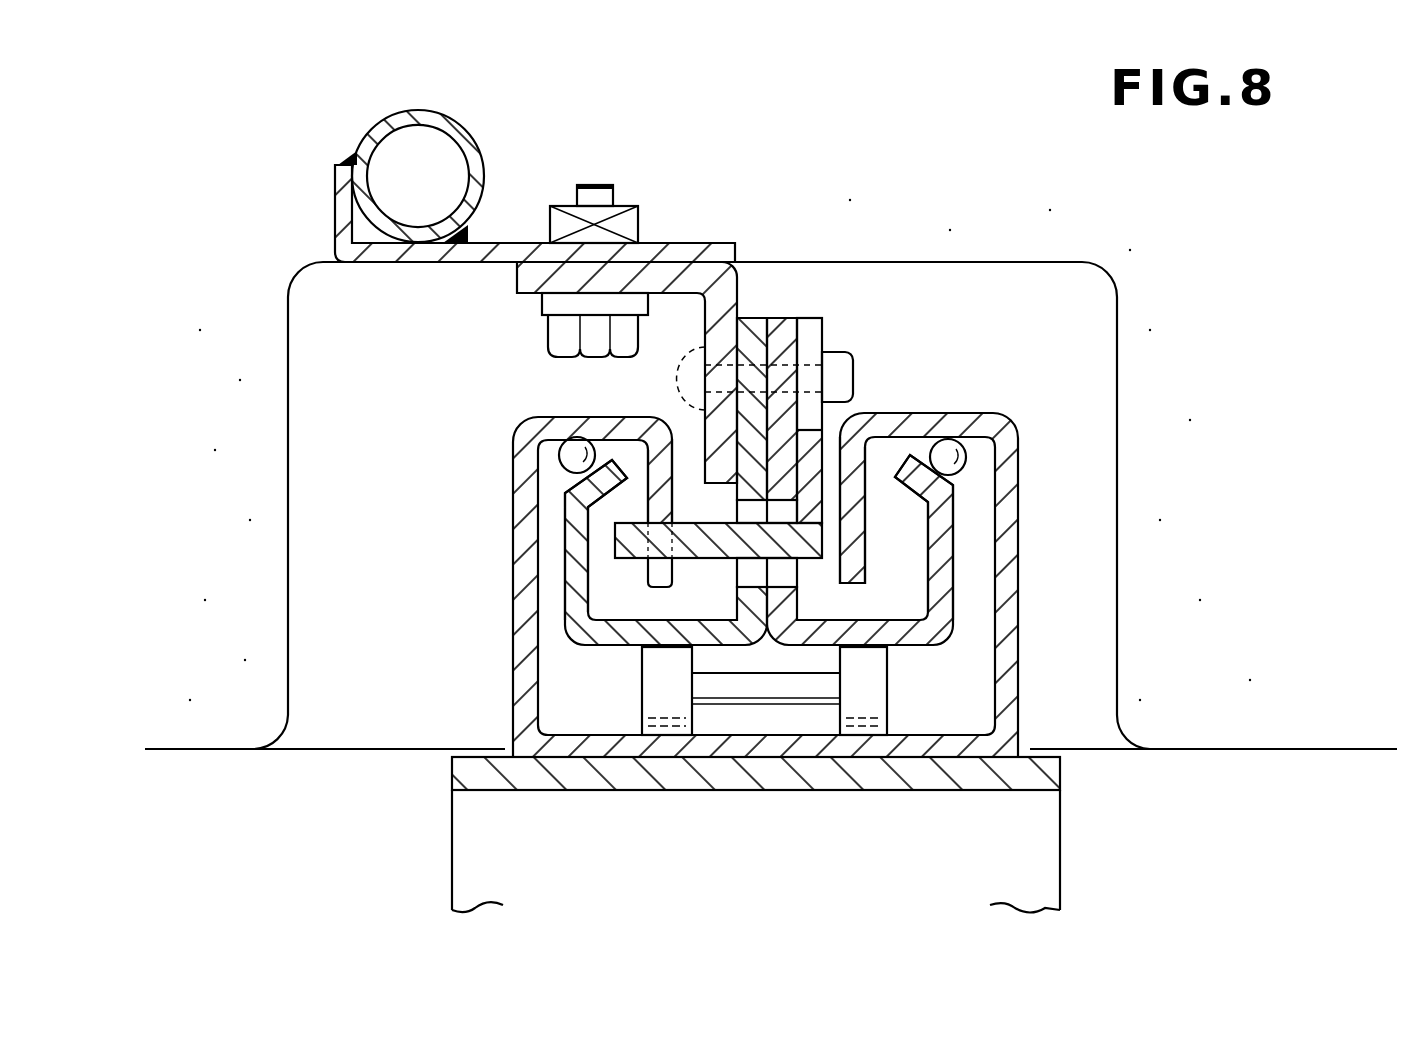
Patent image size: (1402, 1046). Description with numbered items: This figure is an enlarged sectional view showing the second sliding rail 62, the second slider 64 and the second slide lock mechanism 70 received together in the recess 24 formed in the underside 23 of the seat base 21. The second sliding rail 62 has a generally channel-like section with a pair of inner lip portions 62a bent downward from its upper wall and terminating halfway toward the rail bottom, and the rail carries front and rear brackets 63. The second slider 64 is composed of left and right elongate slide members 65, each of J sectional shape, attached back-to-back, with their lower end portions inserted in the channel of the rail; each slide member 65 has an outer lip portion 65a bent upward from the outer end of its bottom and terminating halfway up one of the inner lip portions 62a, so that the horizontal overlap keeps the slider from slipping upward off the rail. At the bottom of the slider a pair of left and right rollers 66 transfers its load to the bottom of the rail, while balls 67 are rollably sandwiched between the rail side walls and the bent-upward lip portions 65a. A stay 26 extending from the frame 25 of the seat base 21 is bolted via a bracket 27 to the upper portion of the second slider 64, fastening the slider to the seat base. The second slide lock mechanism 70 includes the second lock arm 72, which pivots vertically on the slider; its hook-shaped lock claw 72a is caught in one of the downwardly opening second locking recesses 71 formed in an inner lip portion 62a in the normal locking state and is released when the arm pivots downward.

The seat base 21 is at (175, 697).
The underside 23 is at (232, 752).
The recess 24 is at (288, 428).
The frame 25 is at (430, 110).
The stay 26 is at (492, 245).
The bracket 27 is at (683, 282).
The second sliding rail 62 is at (1020, 632).
The inner lip portions 62a is at (662, 488).
The front and rear brackets 63 is at (1048, 865).
The second slider 64 is at (975, 117).
The slide members 65 is at (753, 322).
The outer lip portion 65a is at (573, 515).
The rollers 66 is at (866, 697).
The balls 67 is at (560, 458).
The second slide lock mechanism 70 is at (583, 658).
The second locking recesses 71 is at (660, 545).
The second lock arm 72 is at (815, 465).
The lock claw 72a is at (655, 578).